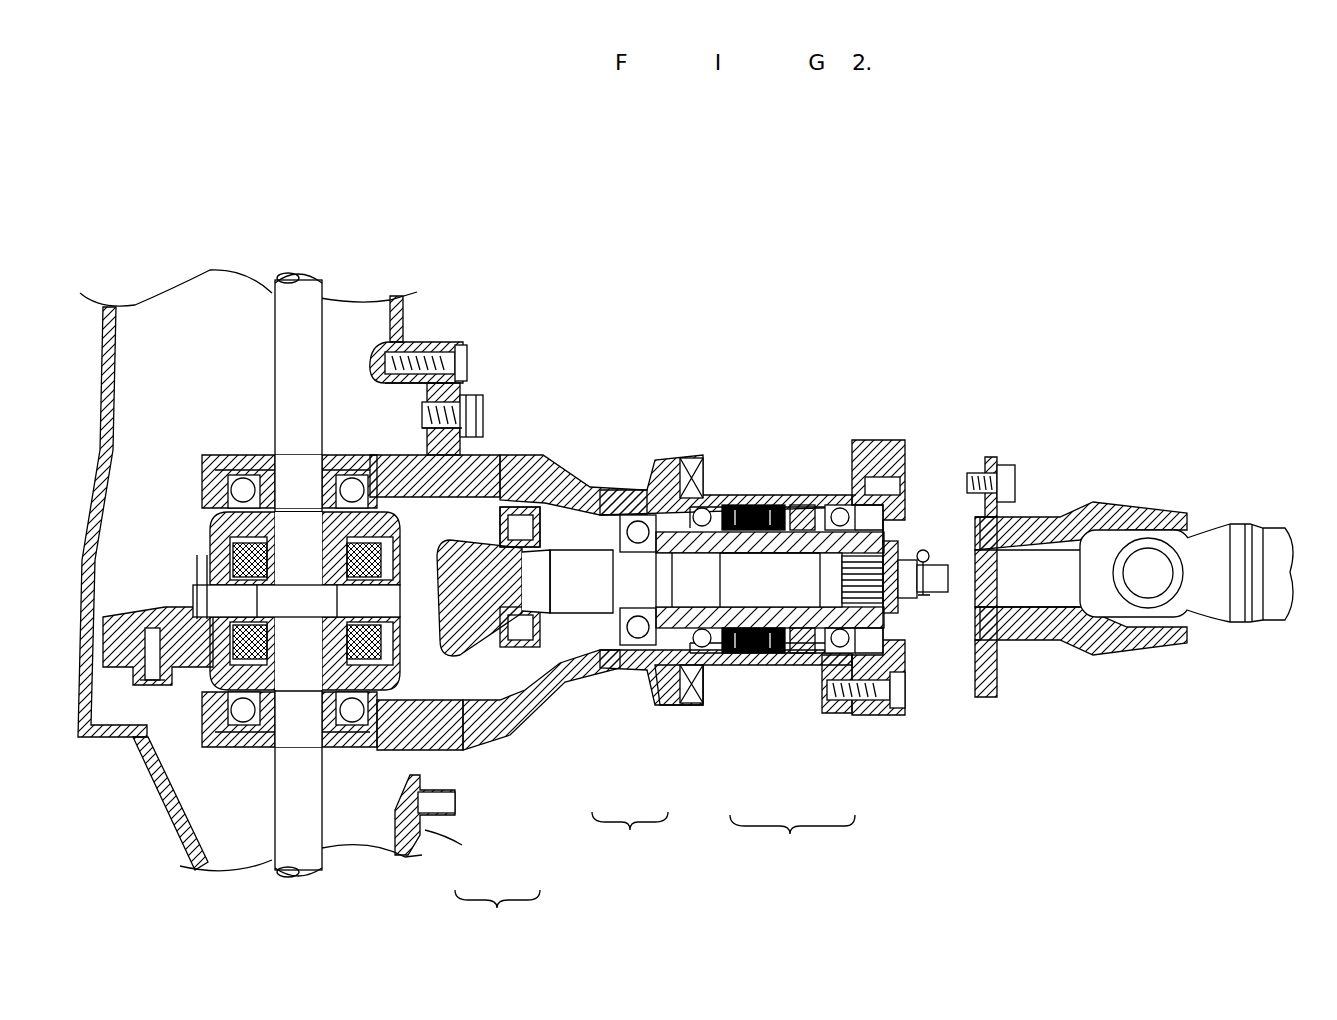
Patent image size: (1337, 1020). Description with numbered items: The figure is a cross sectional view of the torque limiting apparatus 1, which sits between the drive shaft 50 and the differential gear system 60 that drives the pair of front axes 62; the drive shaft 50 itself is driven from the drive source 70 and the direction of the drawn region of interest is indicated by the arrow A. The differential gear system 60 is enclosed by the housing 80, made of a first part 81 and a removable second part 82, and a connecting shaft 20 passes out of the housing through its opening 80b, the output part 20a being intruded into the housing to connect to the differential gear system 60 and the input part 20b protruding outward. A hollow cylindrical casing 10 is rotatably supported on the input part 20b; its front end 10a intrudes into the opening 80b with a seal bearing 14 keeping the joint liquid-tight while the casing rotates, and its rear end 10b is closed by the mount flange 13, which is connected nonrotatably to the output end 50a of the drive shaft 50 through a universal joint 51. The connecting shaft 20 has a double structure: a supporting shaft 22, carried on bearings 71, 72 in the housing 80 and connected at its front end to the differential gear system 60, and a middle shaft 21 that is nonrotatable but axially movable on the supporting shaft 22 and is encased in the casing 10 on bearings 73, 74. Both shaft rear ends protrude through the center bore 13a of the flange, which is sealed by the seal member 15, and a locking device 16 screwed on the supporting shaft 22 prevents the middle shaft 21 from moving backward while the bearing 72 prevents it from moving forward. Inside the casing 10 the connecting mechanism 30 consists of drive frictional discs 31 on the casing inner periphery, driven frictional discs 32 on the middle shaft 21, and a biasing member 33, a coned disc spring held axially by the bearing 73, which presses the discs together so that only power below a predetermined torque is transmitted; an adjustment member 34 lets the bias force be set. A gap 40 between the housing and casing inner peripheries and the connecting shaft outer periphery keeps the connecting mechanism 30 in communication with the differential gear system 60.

The torque limiting apparatus 1 is at (806, 382).
The direction indication A is at (808, 432).
The hollow cylindrical casing 10 is at (770, 477).
The front end of the casing 10a is at (740, 520).
The rear end of the casing 10b is at (828, 470).
The mount flange 13 is at (911, 543).
The center bore of the mount flange 13a is at (897, 527).
The seal bearing 14 is at (687, 707).
The seal member 15 is at (905, 688).
The locking device 16 is at (905, 597).
The connecting shaft 20 is at (657, 653).
The output part of the connecting shaft 20a is at (485, 700).
The input part of the connecting shaft 20b is at (903, 660).
The middle shaft 21 is at (660, 668).
The supporting shaft 22 is at (597, 668).
The connecting mechanism 30 is at (773, 683).
The drive frictional discs 31 is at (790, 668).
The driven frictional discs 32 is at (755, 668).
The biasing member 33 is at (735, 668).
The adjustment member 34 is at (810, 668).
The gap 40 is at (578, 535).
The drive shaft 50 is at (1232, 496).
The output end of the drive shaft 50a is at (1265, 545).
The universal joint 51 is at (1085, 450).
The differential gear system 60 is at (190, 515).
The front axes 62 is at (300, 318).
The drive source 70 is at (296, 601).
The bearing 71 is at (513, 693).
The bearing 72 is at (618, 667).
The bearing 73 is at (715, 665).
The bearing 74 is at (833, 665).
The housing 80 is at (462, 659).
The opening of the housing 80b is at (684, 455).
The first part of the housing 81 is at (393, 827).
The second part of the housing 82 is at (506, 690).